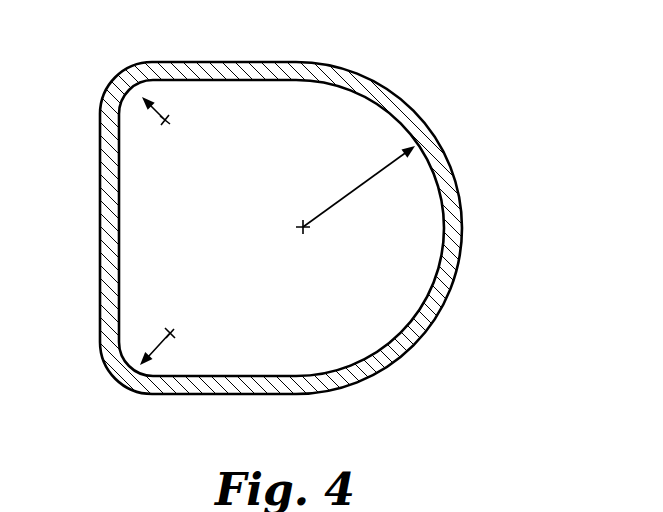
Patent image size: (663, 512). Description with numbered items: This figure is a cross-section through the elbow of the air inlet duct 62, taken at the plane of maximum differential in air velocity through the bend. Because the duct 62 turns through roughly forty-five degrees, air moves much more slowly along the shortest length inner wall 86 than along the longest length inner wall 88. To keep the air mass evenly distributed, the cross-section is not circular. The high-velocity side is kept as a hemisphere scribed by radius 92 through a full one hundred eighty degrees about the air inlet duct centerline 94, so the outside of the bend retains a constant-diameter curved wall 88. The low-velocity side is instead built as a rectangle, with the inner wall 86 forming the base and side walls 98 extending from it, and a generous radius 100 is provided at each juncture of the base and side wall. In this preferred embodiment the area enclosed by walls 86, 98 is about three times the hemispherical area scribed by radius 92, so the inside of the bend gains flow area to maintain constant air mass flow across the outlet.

The air inlet duct 62 is at (417, 113).
The shortest length inner wall 86 is at (120, 250).
The longest length inner wall 88 is at (445, 222).
The radius 92 is at (370, 178).
The air inlet duct centerline 94 is at (301, 231).
The side walls 98 is at (260, 83).
The radius 100 is at (162, 112).